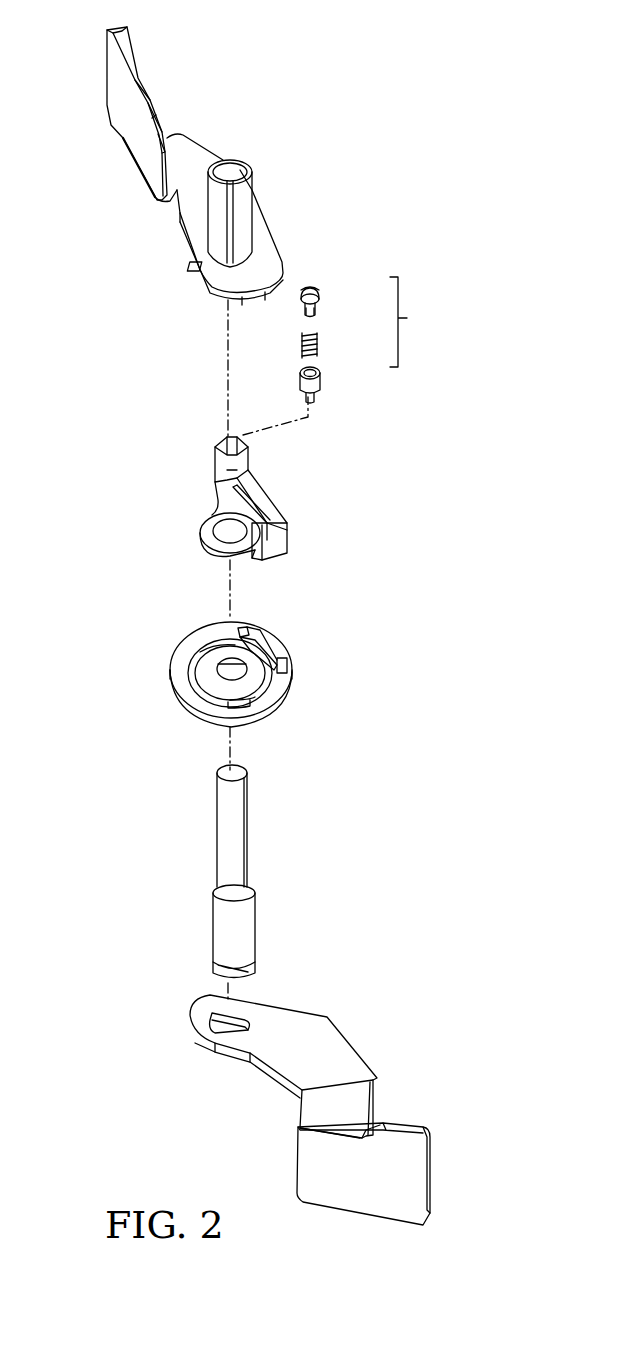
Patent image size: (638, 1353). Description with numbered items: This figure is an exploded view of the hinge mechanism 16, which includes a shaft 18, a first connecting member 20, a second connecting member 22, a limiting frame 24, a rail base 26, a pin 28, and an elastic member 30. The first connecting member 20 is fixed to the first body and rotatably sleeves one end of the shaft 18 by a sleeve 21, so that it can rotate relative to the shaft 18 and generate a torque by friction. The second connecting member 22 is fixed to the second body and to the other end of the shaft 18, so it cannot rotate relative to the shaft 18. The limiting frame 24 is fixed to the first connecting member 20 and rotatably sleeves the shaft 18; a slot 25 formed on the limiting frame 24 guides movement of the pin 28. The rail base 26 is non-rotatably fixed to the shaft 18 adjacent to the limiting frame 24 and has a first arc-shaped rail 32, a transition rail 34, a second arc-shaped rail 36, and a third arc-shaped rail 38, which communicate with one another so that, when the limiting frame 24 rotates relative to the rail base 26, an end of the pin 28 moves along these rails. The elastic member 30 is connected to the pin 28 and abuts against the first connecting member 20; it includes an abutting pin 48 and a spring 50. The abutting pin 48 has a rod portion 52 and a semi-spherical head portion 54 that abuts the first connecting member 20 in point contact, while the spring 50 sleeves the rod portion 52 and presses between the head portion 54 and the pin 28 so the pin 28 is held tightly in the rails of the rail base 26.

The hinge mechanism 16 is at (440, 83).
The shaft 18 is at (243, 927).
The first connecting member 20 is at (120, 87).
The sleeve 21 is at (245, 207).
The second connecting member 22 is at (417, 1173).
The limiting frame 24 is at (277, 543).
The slot 25 is at (266, 508).
The rail base 26 is at (290, 647).
The pin 28 is at (322, 378).
The elastic member 30 is at (416, 322).
The first arc-shaped rail 32 is at (270, 638).
The transition rail 34 is at (243, 627).
The second arc-shaped rail 36 is at (193, 677).
The third arc-shaped rail 38 is at (287, 667).
The abutting pin 48 is at (325, 290).
The spring 50 is at (320, 342).
The rod portion 52 is at (306, 316).
The head portion 54 is at (313, 290).